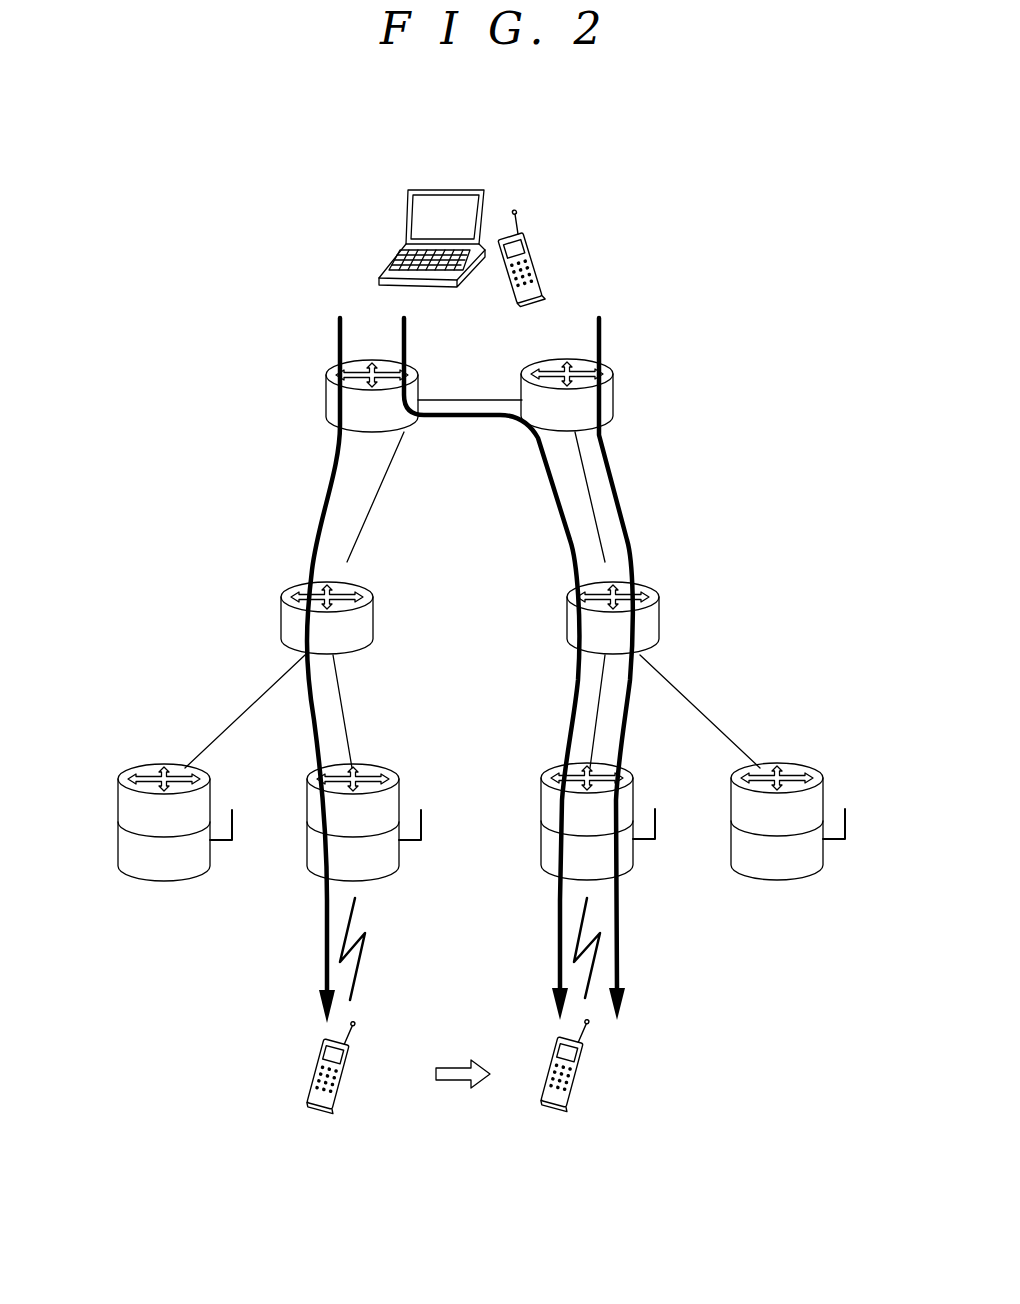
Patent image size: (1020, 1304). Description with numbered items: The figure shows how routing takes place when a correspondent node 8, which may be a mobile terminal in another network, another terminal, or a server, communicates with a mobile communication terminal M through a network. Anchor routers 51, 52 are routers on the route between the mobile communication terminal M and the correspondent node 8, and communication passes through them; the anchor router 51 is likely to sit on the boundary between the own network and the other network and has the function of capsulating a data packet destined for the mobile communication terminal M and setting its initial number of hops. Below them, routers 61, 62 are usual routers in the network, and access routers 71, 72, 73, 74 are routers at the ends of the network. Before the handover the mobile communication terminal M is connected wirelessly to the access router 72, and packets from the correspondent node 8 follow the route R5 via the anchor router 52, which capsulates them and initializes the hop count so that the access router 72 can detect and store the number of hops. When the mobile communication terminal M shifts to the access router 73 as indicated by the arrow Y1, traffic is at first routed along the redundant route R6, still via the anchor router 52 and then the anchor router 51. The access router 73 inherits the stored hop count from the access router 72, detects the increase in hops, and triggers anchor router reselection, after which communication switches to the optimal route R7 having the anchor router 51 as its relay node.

The correspondent node 8 is at (507, 203).
The anchor router 51 is at (613, 388).
The anchor router 52 is at (326, 388).
The router 61 is at (280, 612).
The router 62 is at (660, 612).
The access router 71 is at (145, 768).
The access router 72 is at (380, 768).
The access router 73 is at (635, 798).
The access router 74 is at (800, 768).
The mobile communication terminal M is at (330, 1062).
The route R5 is at (324, 478).
The route R6 is at (456, 420).
The route R7 is at (616, 478).
The arrow Y1 is at (452, 1068).